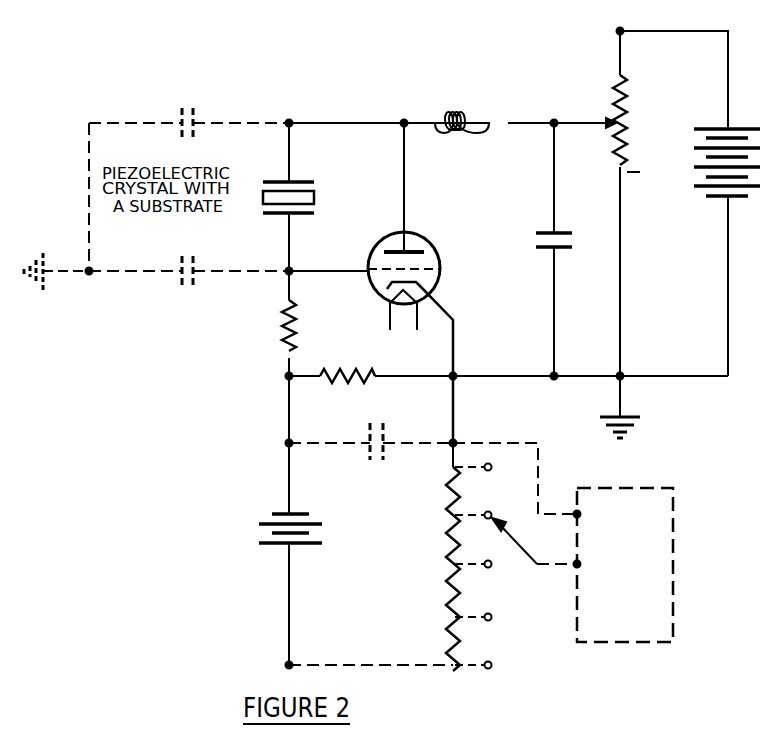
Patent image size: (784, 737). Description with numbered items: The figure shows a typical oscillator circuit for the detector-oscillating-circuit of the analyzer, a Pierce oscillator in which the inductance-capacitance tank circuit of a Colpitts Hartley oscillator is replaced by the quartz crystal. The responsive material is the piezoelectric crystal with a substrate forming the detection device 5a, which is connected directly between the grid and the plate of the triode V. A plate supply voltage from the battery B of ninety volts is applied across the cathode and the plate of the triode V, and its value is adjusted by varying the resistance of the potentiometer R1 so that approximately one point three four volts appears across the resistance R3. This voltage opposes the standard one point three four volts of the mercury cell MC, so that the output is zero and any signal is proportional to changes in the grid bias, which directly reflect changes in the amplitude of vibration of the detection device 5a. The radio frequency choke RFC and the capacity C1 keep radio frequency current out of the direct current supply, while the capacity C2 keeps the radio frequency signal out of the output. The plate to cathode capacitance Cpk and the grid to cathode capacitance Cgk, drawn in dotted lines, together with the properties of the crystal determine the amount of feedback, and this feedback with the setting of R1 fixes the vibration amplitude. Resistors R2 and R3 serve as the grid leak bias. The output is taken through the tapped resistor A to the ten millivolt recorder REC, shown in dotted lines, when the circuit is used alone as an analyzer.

The detection device 5a is at (240, 187).
The plate to cathode capacitance Cpk is at (191, 109).
The grid to cathode capacitance Cgk is at (194, 293).
The potentiometer R1 is at (625, 114).
The resistor R2 is at (282, 322).
The resistance R3 is at (345, 371).
The capacity C1 is at (536, 245).
The capacity C2 is at (378, 462).
The tapped resistor A is at (449, 548).
The radio frequency choke RFC is at (464, 113).
The B+ voltage B is at (694, 148).
The mercury cell MC is at (256, 527).
The recorder REC is at (666, 543).
The triode V is at (410, 283).